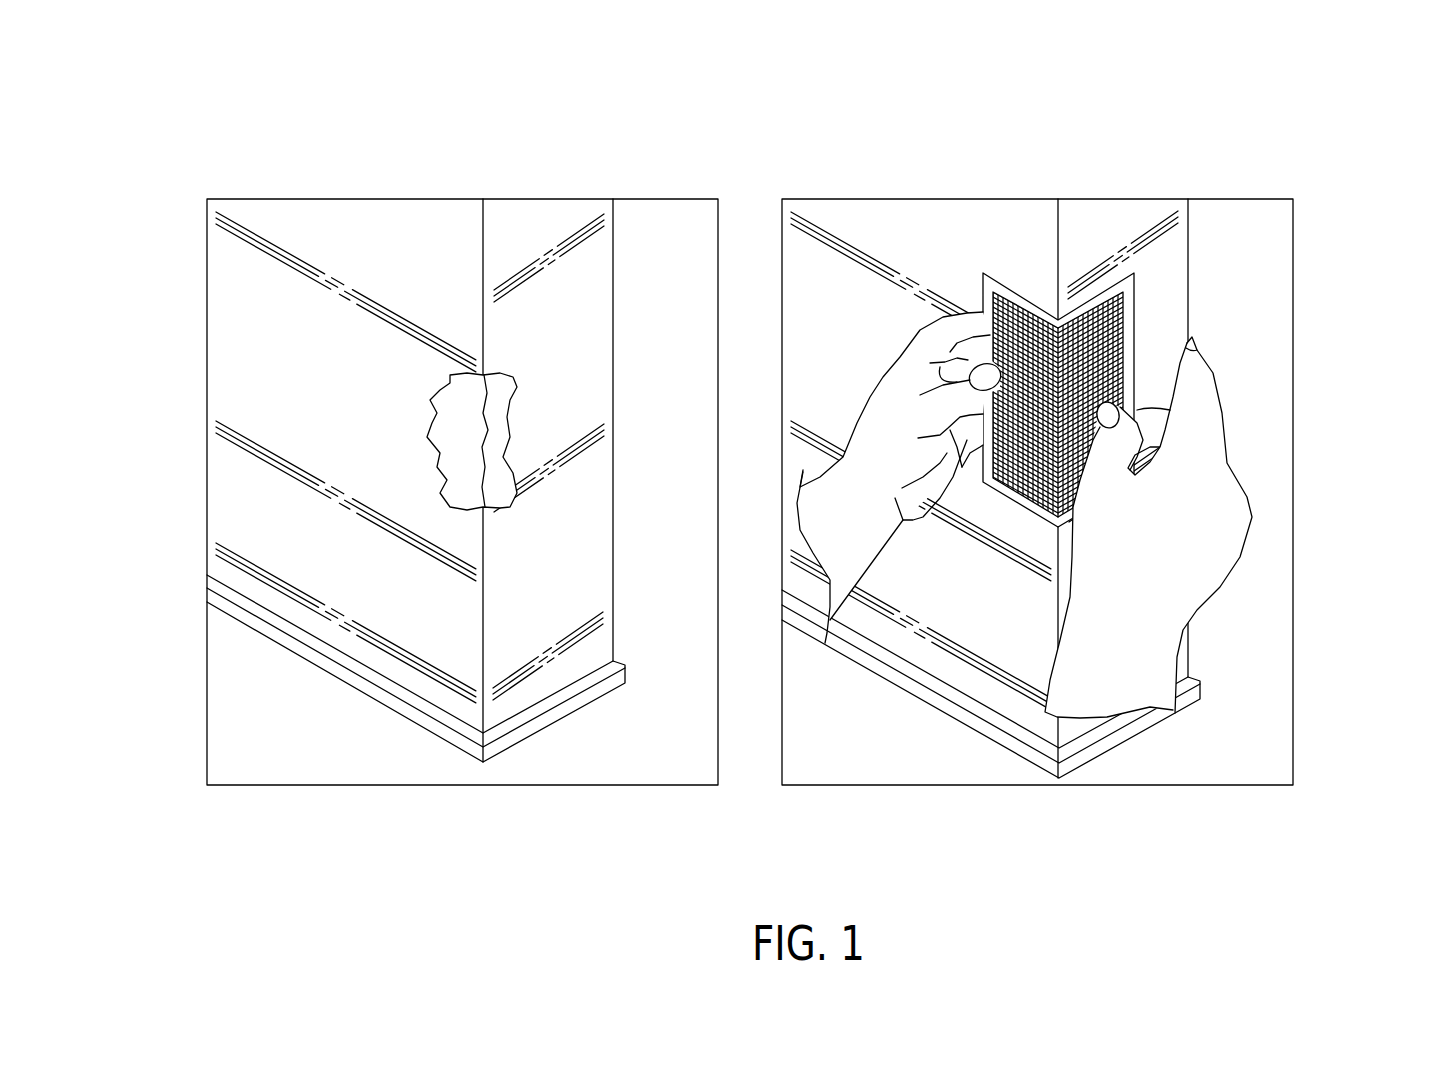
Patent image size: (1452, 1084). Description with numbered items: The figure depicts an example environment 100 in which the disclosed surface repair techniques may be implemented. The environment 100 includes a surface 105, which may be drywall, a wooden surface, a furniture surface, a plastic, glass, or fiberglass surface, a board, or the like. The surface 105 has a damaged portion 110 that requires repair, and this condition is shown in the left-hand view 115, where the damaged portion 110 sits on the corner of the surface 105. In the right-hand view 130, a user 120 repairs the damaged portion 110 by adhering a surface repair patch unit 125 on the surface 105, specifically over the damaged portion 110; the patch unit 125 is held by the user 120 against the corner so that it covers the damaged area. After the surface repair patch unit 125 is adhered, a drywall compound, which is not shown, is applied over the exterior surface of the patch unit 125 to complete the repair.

The environment 100 is at (190, 95).
The surface 105 is at (586, 331).
The damaged portion 110 is at (458, 413).
The view 115 is at (401, 199).
The user 120 is at (1200, 565).
The surface repair patch unit 125 is at (1025, 297).
The view 130 is at (908, 199).